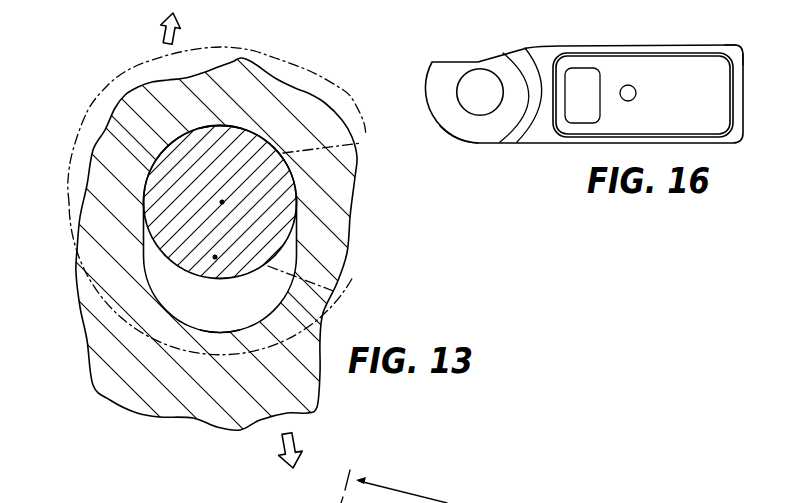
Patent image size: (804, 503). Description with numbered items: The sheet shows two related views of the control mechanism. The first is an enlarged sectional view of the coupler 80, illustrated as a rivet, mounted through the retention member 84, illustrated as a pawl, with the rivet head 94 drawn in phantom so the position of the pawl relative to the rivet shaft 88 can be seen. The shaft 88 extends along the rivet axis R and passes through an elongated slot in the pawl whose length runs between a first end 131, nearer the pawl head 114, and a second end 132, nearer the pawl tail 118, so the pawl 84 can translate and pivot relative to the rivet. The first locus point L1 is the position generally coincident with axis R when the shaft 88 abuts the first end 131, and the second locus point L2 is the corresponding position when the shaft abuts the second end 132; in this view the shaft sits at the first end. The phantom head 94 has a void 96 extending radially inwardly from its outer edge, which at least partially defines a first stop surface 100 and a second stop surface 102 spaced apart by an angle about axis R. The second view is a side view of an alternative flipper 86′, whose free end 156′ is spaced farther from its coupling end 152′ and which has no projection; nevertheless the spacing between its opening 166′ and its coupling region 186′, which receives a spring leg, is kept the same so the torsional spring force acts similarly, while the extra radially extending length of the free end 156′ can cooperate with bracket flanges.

In FIG. 13, the coupler 80 is at (64, 211).
In FIG. 13, the retention member 84 is at (328, 177).
In FIG. 13, the shaft 88 is at (213, 172).
In FIG. 13, the head 94 is at (250, 352).
In FIG. 13, the void 96 is at (340, 218).
In FIG. 13, the first stop surface 100 is at (314, 150).
In FIG. 13, the second stop surface 102 is at (334, 293).
In FIG. 13, the head 114 is at (169, 36).
In FIG. 13, the tail 118 is at (284, 452).
In FIG. 13, the first end 131 is at (224, 126).
In FIG. 13, the second end 132 is at (199, 322).
In FIG. 13, the first locus point L1 is at (220, 201).
In FIG. 13, the second locus point L2 is at (214, 255).
In FIG. 13, the rivet axis R is at (239, 203).
In FIG. 16, the flipper 86′ is at (546, 180).
In FIG. 16, the coupling end 152′ is at (477, 152).
In FIG. 16, the free end 156′ is at (744, 52).
In FIG. 16, the opening 166′ is at (472, 74).
In FIG. 16, the coupling region 186′ is at (636, 93).